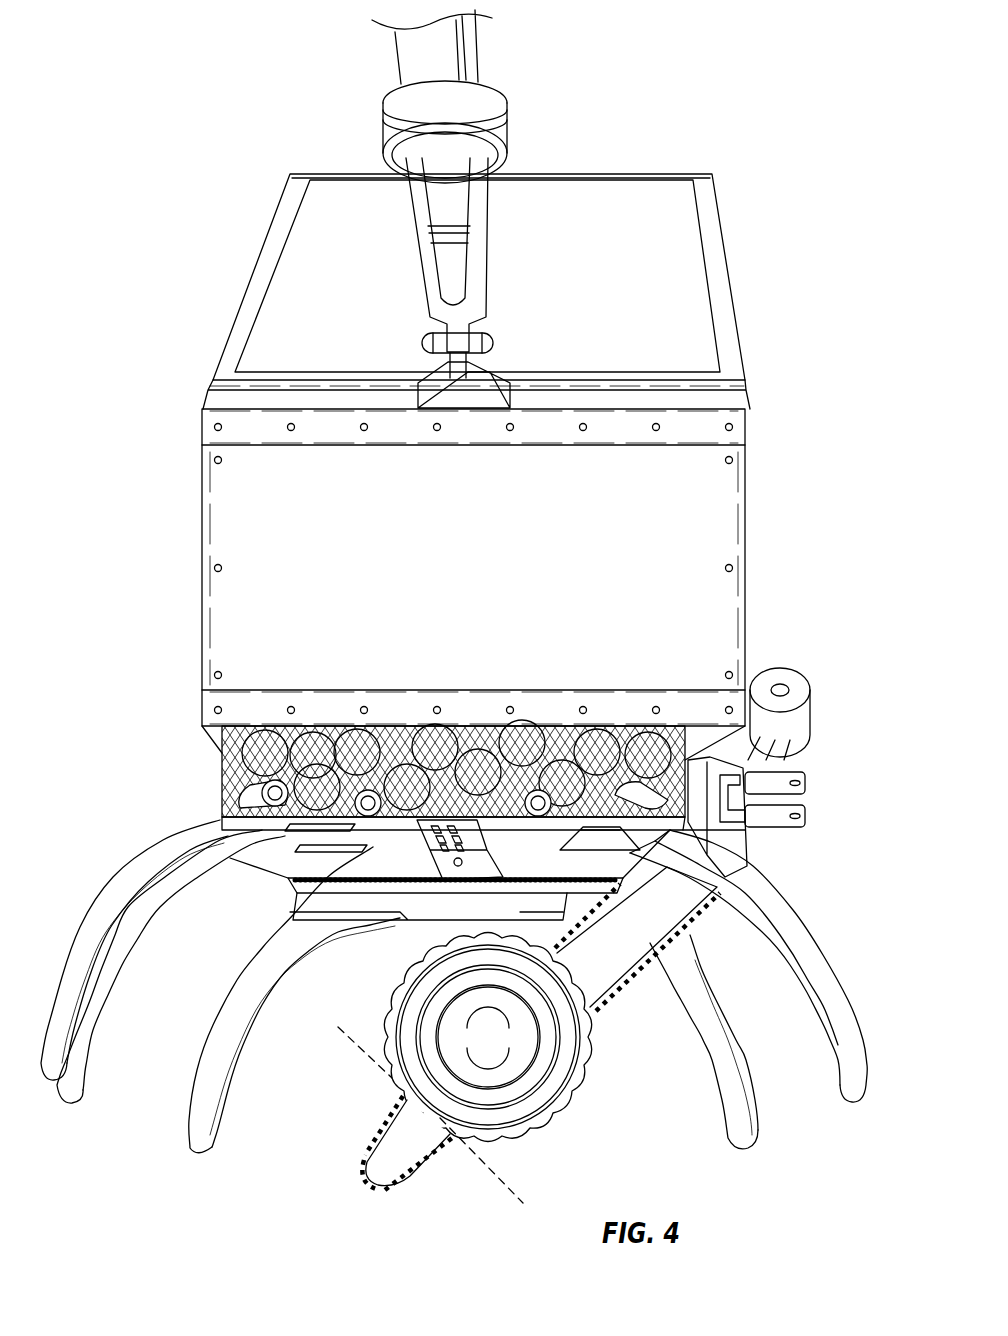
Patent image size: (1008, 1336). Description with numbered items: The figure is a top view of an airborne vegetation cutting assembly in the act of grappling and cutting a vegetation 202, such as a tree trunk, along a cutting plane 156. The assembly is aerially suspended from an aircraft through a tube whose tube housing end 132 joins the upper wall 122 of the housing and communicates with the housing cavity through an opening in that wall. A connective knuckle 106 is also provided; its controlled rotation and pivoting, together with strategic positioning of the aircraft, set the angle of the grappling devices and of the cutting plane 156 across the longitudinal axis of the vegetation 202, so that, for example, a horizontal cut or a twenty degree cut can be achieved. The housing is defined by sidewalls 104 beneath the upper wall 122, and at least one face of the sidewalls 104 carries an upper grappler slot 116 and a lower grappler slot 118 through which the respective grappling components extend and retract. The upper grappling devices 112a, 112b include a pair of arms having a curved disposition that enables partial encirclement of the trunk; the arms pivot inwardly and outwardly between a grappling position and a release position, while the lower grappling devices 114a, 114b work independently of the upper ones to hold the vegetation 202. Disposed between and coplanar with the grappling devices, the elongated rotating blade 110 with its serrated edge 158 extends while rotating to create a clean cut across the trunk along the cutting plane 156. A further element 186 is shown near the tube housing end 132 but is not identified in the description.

The tube housing end 132 is at (470, 60).
The swivel ring 186 is at (505, 108).
The connective knuckle 106 is at (488, 217).
The upper wall 122 is at (615, 300).
The sidewalls 104 is at (493, 580).
The upper grappler slot 116 is at (598, 840).
The lower grappler slot 118 is at (387, 913).
The upper grappling device 112a is at (162, 862).
The upper grappling device 112b is at (790, 915).
The lower grappling device 114a is at (183, 1120).
The lower grappling device 114b is at (740, 1107).
The serrated edge 158 is at (613, 990).
The vegetation 202 is at (510, 1052).
The cutting plane 156 is at (357, 1047).
The rotating blade 110 is at (370, 1193).